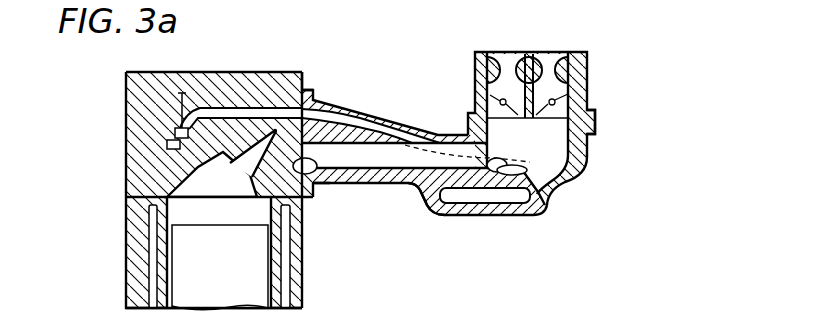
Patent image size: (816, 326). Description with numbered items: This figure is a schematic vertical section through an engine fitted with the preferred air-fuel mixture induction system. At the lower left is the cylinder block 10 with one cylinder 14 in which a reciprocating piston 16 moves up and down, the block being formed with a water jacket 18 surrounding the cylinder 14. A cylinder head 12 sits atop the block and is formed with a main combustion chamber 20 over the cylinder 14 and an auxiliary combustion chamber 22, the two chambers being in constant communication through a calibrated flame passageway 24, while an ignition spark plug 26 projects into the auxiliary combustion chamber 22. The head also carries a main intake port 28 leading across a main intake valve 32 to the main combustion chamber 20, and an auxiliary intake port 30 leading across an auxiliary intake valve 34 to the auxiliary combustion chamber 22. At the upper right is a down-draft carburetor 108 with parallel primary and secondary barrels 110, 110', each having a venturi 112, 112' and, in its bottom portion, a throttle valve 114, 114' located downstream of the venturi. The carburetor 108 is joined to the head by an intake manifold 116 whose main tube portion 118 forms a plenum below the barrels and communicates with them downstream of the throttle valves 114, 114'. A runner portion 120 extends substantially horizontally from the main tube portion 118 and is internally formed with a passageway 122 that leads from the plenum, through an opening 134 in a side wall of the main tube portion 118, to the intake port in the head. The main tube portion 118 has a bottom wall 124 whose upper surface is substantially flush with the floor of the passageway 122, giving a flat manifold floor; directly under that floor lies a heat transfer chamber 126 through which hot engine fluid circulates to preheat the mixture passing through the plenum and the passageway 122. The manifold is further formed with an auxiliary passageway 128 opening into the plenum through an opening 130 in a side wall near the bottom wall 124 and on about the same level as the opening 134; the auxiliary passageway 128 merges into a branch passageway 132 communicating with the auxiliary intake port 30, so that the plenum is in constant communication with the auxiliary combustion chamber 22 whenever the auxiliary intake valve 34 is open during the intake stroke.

The cylinder block 10 is at (310, 272).
The cylinder head 12 is at (308, 70).
The cylinder 14 is at (268, 274).
The piston 16 is at (180, 258).
The water jacket 18 is at (288, 295).
The main combustion chamber 20 is at (230, 198).
The auxiliary combustion chamber 22 is at (203, 134).
The flame passageway 24 is at (210, 182).
The ignition spark plug 26 is at (178, 152).
The main intake port 28 is at (320, 186).
The auxiliary intake port 30 is at (233, 108).
The main intake valve 32 is at (303, 223).
The auxiliary intake valve 34 is at (175, 135).
The carburetor 108 is at (468, 64).
The primary barrel 110 is at (517, 41).
The secondary barrel 110' is at (562, 59).
The venturi 112 is at (470, 48).
The venturi 112' is at (596, 50).
The throttle valve 114 is at (506, 122).
The throttle valve 114' is at (593, 93).
The intake manifold 116 is at (434, 223).
The main tube portion 118 is at (588, 145).
The runner portion 120 is at (362, 185).
The passageway 122 is at (378, 167).
The bottom wall 124 is at (560, 168).
The heat transfer chamber 126 is at (522, 206).
The auxiliary passageway 128 is at (452, 154).
The opening 130 is at (548, 198).
The branch passageway 132 is at (335, 114).
The opening 134 is at (540, 212).